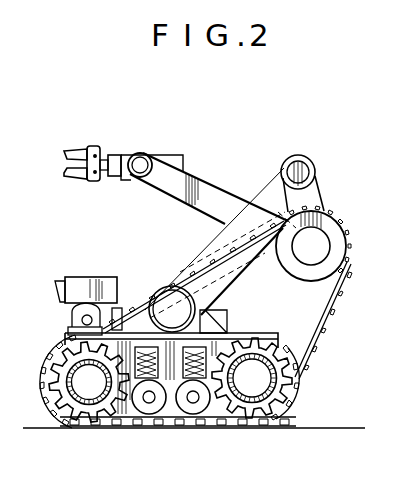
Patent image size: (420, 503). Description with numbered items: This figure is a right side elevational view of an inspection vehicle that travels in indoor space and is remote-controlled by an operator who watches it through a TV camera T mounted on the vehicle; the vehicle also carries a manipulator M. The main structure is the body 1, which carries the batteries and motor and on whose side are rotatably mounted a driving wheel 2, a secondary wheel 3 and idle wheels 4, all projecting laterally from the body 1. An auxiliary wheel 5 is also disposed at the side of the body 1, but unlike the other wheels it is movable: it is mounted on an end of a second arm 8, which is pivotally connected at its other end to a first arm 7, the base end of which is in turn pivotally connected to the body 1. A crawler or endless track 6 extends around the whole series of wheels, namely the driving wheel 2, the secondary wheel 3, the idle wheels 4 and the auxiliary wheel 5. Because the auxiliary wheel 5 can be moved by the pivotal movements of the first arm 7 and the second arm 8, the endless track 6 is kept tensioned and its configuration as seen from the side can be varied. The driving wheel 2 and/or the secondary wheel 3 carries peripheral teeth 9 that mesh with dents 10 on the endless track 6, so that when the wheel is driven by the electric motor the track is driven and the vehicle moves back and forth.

The manipulator M is at (209, 192).
The TV camera T is at (90, 278).
The body 1 is at (268, 334).
The driving wheel 2 is at (60, 356).
The secondary wheel 3 is at (283, 380).
The idle wheels 4 is at (202, 424).
The auxiliary wheel 5 is at (342, 232).
The endless track 6 is at (338, 303).
The first arm 7 is at (266, 193).
The second arm 8 is at (316, 188).
The peripheral teeth 9 is at (292, 398).
The dents 10 is at (285, 408).